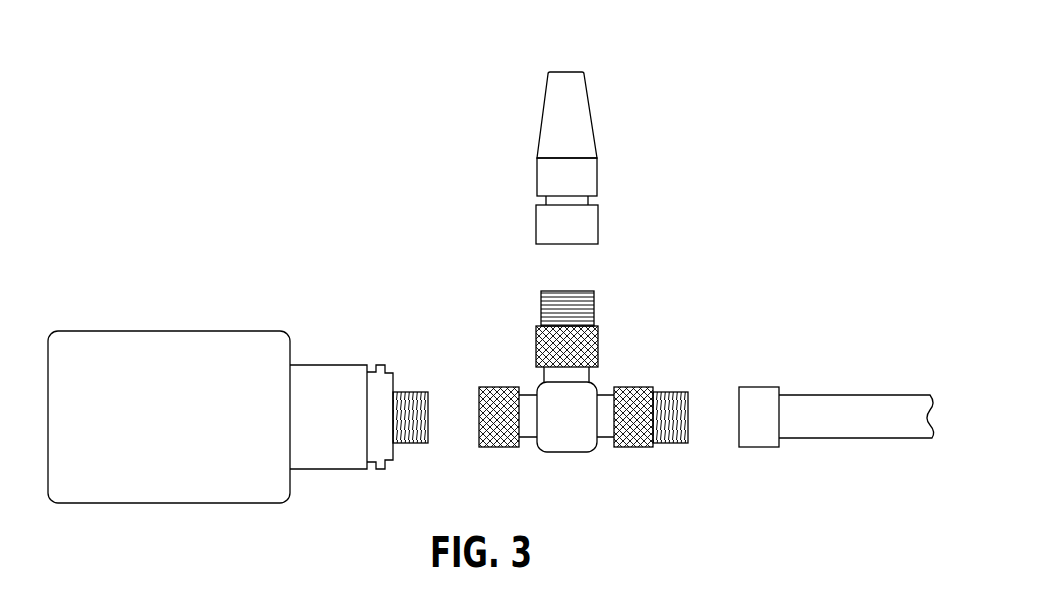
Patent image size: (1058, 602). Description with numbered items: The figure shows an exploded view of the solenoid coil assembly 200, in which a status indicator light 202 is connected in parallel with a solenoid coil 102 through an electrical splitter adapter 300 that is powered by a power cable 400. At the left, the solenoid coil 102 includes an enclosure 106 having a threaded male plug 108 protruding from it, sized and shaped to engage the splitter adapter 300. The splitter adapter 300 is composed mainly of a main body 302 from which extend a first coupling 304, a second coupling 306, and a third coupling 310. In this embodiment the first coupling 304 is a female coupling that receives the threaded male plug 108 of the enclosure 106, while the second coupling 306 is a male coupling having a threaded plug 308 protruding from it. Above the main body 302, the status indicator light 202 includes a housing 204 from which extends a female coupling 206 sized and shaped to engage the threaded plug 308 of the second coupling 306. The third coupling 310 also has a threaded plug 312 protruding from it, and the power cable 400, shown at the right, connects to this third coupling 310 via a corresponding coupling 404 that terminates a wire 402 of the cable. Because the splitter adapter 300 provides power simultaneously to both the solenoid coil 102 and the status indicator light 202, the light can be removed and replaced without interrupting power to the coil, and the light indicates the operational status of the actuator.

The solenoid coil assembly 200 is at (77, 61).
The solenoid coil 102 is at (41, 319).
The enclosure 106 is at (170, 330).
The threaded male plug 108 is at (412, 391).
The status indicator light 202 is at (509, 137).
The housing 204 is at (598, 167).
The female coupling 206 is at (598, 218).
The splitter adapter 300 is at (507, 337).
The main body 302 is at (552, 427).
The first coupling 304 is at (500, 386).
The second coupling 306 is at (598, 350).
The threaded plug 308 is at (594, 302).
The third coupling 310 is at (632, 387).
The threaded plug 312 is at (678, 392).
The power cable 400 is at (835, 340).
The wire 402 is at (843, 395).
The coupling 404 is at (757, 387).